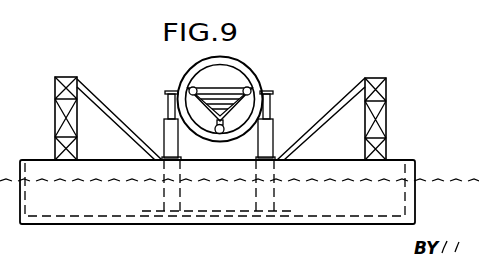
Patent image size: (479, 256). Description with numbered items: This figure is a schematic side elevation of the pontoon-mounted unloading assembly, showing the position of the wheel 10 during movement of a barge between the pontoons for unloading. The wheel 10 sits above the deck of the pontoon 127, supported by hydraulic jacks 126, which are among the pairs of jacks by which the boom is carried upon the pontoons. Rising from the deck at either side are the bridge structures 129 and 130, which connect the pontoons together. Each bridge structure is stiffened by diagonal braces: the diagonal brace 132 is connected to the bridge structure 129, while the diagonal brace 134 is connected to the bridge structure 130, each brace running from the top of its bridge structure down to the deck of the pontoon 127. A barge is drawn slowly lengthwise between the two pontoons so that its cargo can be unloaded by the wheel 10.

The wheel 10 is at (256, 80).
The hydraulic jacks 126 is at (275, 128).
The pontoon 127 is at (217, 217).
The bridge structure 129 is at (60, 77).
The bridge structure 130 is at (375, 78).
The diagonal brace 132 is at (106, 106).
The diagonal brace 134 is at (334, 105).